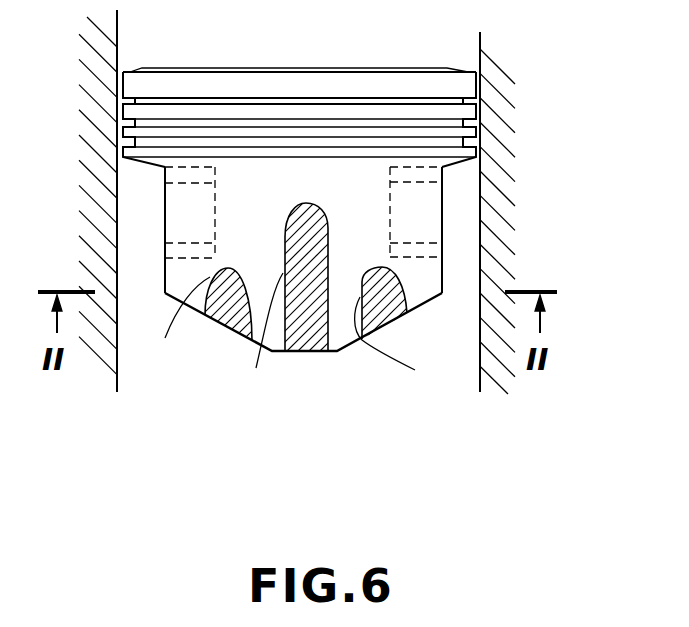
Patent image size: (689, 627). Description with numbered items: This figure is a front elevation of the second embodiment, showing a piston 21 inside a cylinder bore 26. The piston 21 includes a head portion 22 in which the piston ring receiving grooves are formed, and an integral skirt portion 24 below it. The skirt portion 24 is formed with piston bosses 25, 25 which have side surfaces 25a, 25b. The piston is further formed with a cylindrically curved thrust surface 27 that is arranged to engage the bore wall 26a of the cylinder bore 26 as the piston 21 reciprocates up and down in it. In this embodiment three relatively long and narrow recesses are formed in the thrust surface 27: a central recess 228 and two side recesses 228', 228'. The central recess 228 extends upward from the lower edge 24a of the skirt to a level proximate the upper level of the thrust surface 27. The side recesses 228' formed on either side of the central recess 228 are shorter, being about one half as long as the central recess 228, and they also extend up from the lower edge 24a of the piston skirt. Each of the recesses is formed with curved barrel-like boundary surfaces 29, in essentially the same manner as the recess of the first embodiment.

The piston 21 is at (462, 180).
The head portion 22 is at (353, 70).
The skirt portion 24 is at (167, 267).
The lower edge of the skirt 24a is at (337, 352).
The piston bosses 25 is at (172, 187).
The side surface of piston boss 25a is at (167, 230).
The side surface of piston boss 25b is at (485, 227).
The cylinder bore 26 is at (498, 112).
The bore wall 26a is at (478, 248).
The thrust surface 27 is at (268, 190).
The curved barrel-like boundary surfaces 29 is at (298, 336).
The central recess 228 is at (327, 300).
The side recess 228' is at (327, 300).